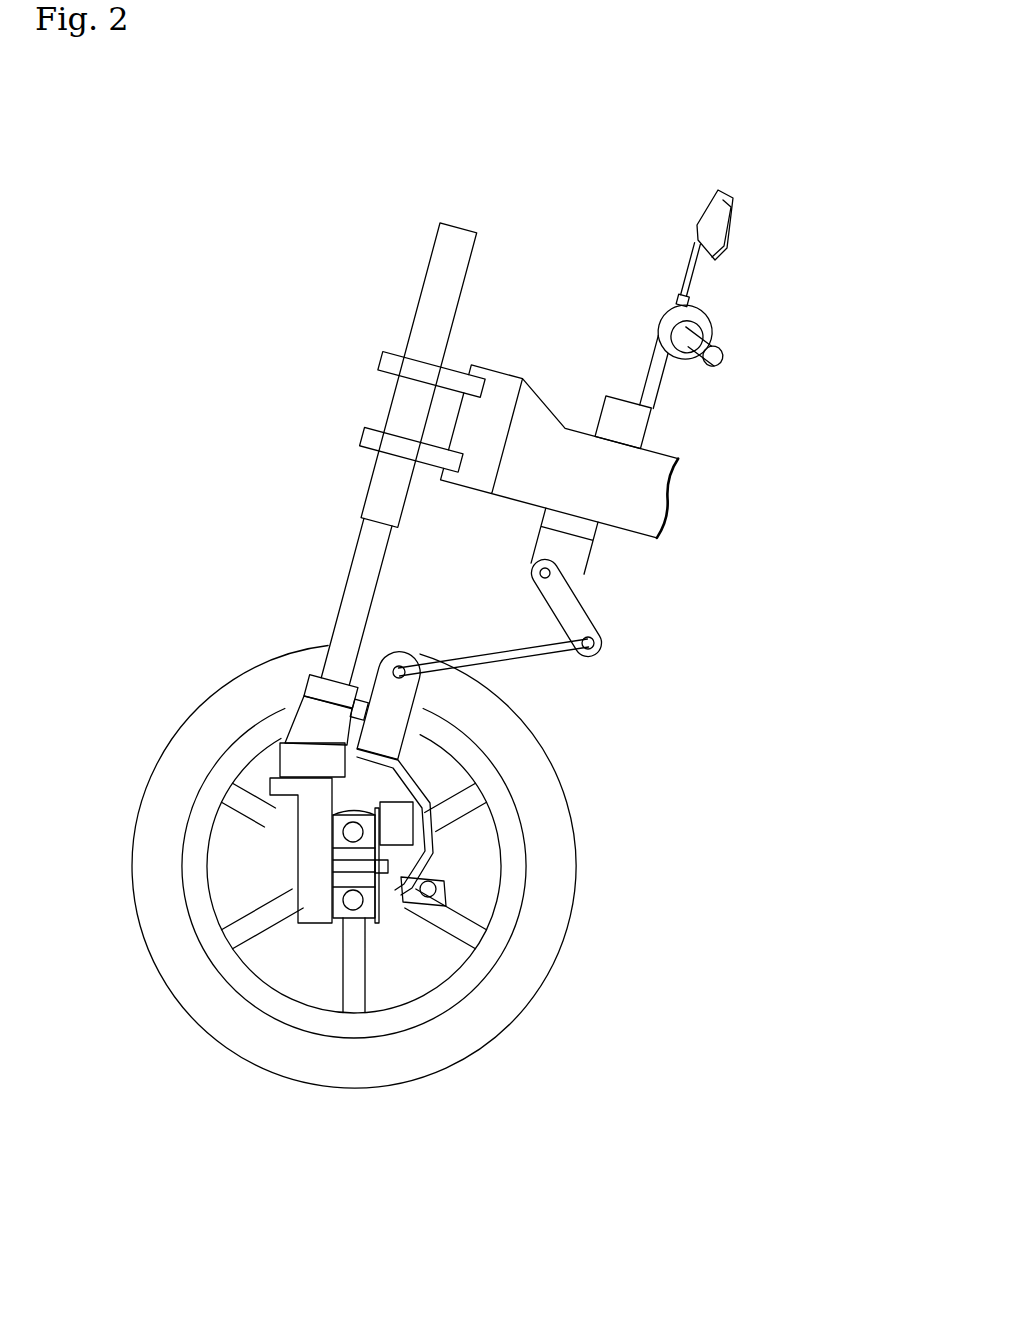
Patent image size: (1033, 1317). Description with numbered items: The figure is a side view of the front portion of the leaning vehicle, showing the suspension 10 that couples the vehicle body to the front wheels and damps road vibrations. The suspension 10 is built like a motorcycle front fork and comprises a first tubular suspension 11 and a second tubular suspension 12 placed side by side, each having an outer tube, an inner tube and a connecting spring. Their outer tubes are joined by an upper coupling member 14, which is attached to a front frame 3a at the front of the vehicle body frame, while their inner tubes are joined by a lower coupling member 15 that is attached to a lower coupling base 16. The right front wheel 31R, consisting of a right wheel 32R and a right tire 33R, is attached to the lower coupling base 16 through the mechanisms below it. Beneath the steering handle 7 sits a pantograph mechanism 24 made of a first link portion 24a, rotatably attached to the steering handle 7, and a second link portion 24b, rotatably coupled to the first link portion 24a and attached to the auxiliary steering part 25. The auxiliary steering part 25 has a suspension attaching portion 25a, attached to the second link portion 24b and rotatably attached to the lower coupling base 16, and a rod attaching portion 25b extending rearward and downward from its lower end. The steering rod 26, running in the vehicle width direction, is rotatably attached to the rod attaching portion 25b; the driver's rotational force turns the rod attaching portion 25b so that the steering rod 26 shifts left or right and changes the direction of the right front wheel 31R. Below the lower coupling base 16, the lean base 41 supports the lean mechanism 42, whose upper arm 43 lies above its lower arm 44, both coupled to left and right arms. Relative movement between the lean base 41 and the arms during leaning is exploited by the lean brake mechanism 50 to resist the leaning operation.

The suspension 10 is at (368, 174).
The steering handle 7 is at (782, 224).
The first tubular suspension 11 is at (442, 250).
The second tubular suspension 12 is at (412, 302).
The upper coupling member 14 is at (365, 428).
The housing 3a is at (538, 414).
The lower coupling member 15 is at (308, 688).
The lower coupling base 16 is at (297, 727).
The pantograph mechanism 24 is at (762, 635).
The first link portion 24a is at (578, 613).
The second link portion 24b is at (555, 647).
The auxiliary steering part 25 is at (692, 730).
The suspension attaching portion 25a is at (407, 688).
The rod attaching portion 25b is at (420, 775).
The lean brake mechanism 50 is at (400, 828).
The lean mechanism 42 is at (402, 934).
The upper arm 43 is at (300, 828).
The lean base 41 is at (300, 863).
The lower arm 44 is at (353, 920).
The steering rod 26 is at (450, 893).
The right front wheel 31R is at (420, 1178).
The right wheel 32R is at (304, 1044).
The right tire 33R is at (402, 1072).